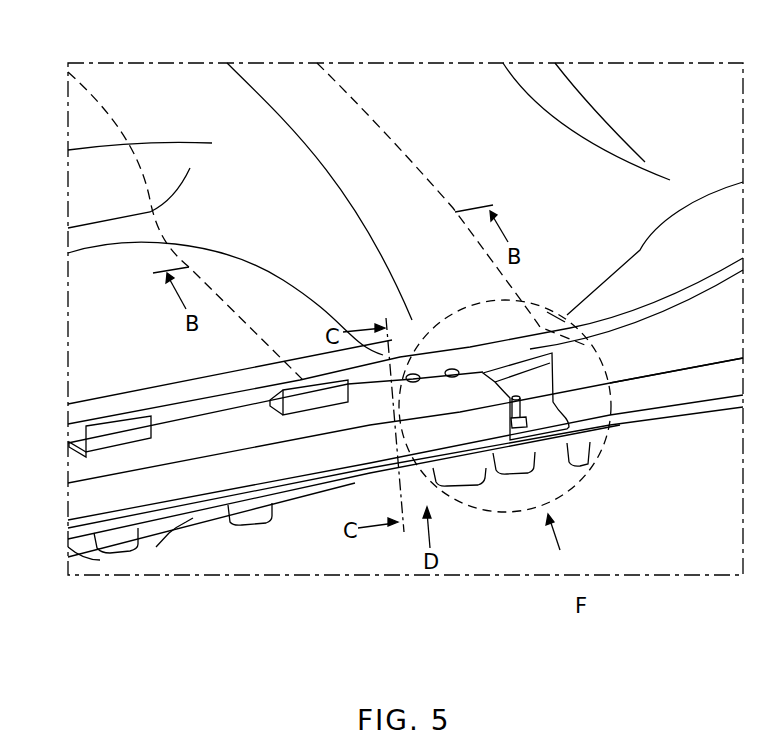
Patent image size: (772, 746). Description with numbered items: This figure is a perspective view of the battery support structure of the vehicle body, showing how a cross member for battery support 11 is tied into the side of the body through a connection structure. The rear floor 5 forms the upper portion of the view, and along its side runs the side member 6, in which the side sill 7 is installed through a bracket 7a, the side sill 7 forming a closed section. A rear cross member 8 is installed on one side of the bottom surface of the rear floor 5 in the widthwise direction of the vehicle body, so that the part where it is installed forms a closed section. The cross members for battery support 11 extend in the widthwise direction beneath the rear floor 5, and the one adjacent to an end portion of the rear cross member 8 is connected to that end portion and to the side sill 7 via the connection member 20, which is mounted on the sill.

The rear floor 5 is at (592, 122).
The side member 6 is at (660, 365).
The side sill 7 is at (210, 484).
The bracket 7a is at (113, 430).
The rear cross member 8 is at (377, 122).
The cross member for battery support 11 is at (161, 537).
The connection member 20 is at (562, 378).